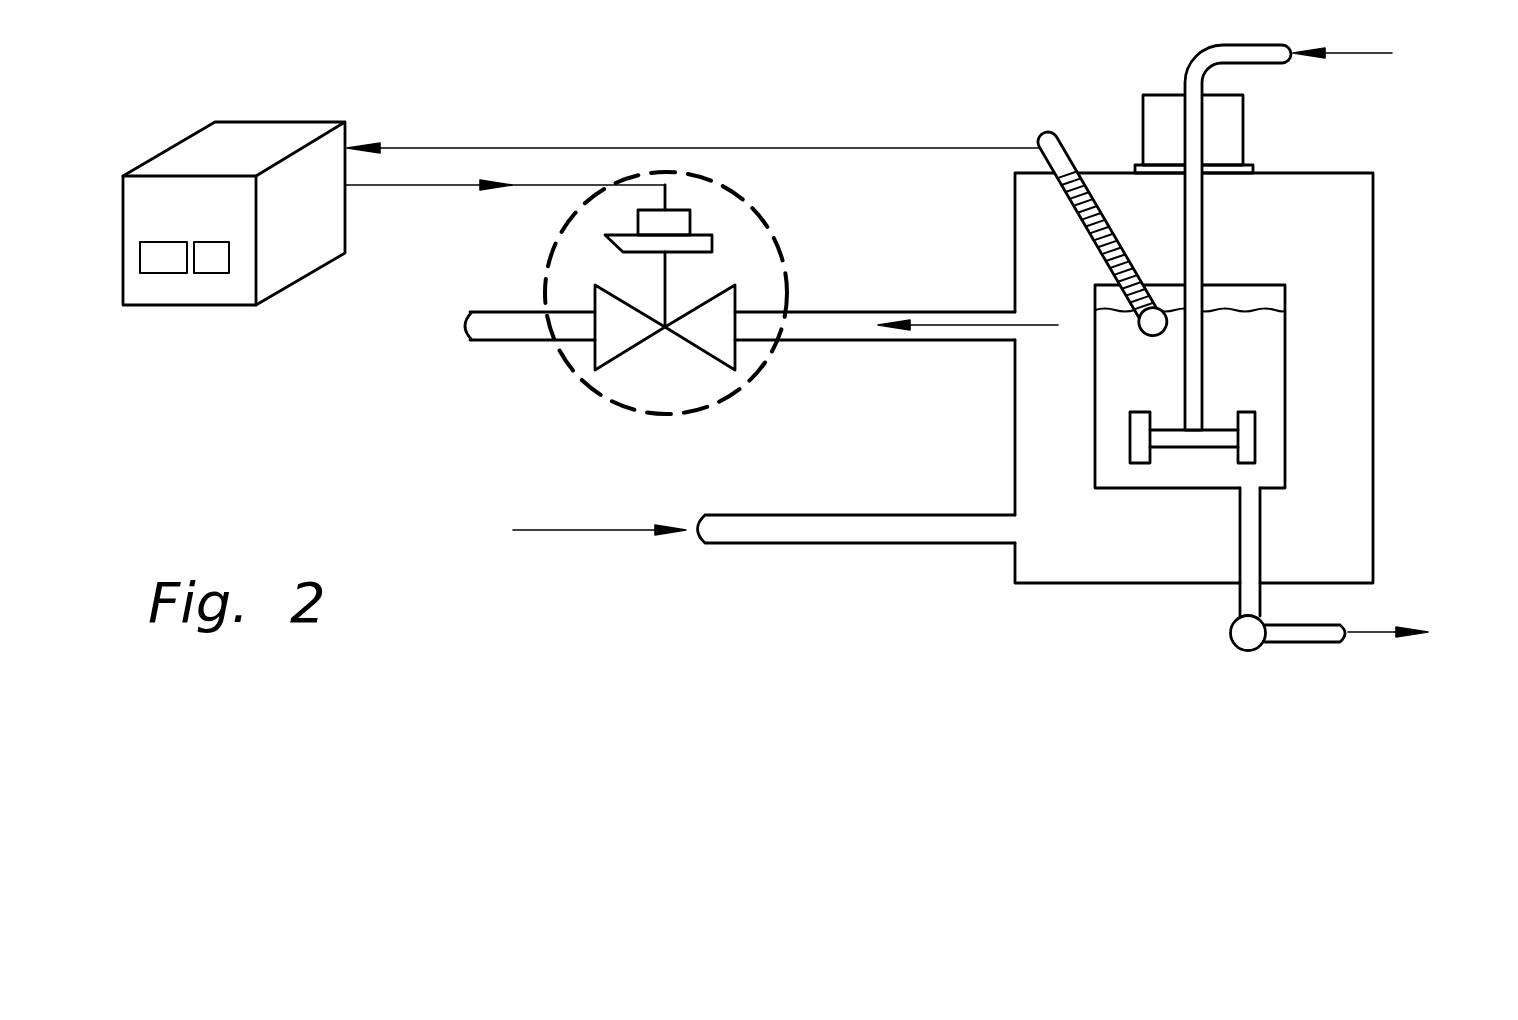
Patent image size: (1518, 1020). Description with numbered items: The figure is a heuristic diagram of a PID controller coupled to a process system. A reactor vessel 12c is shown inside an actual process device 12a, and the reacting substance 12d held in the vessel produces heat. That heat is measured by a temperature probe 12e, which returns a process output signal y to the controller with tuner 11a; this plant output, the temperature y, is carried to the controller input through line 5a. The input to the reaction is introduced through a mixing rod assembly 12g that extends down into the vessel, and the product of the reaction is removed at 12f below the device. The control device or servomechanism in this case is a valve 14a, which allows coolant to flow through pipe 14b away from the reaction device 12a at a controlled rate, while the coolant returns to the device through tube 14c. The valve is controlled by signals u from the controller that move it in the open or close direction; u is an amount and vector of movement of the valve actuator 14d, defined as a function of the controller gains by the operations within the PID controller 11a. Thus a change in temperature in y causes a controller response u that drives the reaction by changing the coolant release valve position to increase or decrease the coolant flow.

The controller with tuner 11a is at (234, 261).
The line 5a is at (692, 119).
The valve 14a is at (626, 327).
The valve actuator 14d is at (710, 228).
The pipe 14b is at (896, 369).
The tube 14c is at (764, 576).
The process device 12a is at (1258, 378).
The reactor vessel 12c is at (1230, 432).
The reacting substance 12d is at (1190, 341).
The temperature probe 12e is at (1101, 185).
The mixing rod assembly 12g is at (1263, 237).
The product removal outlet 12f is at (1330, 677).